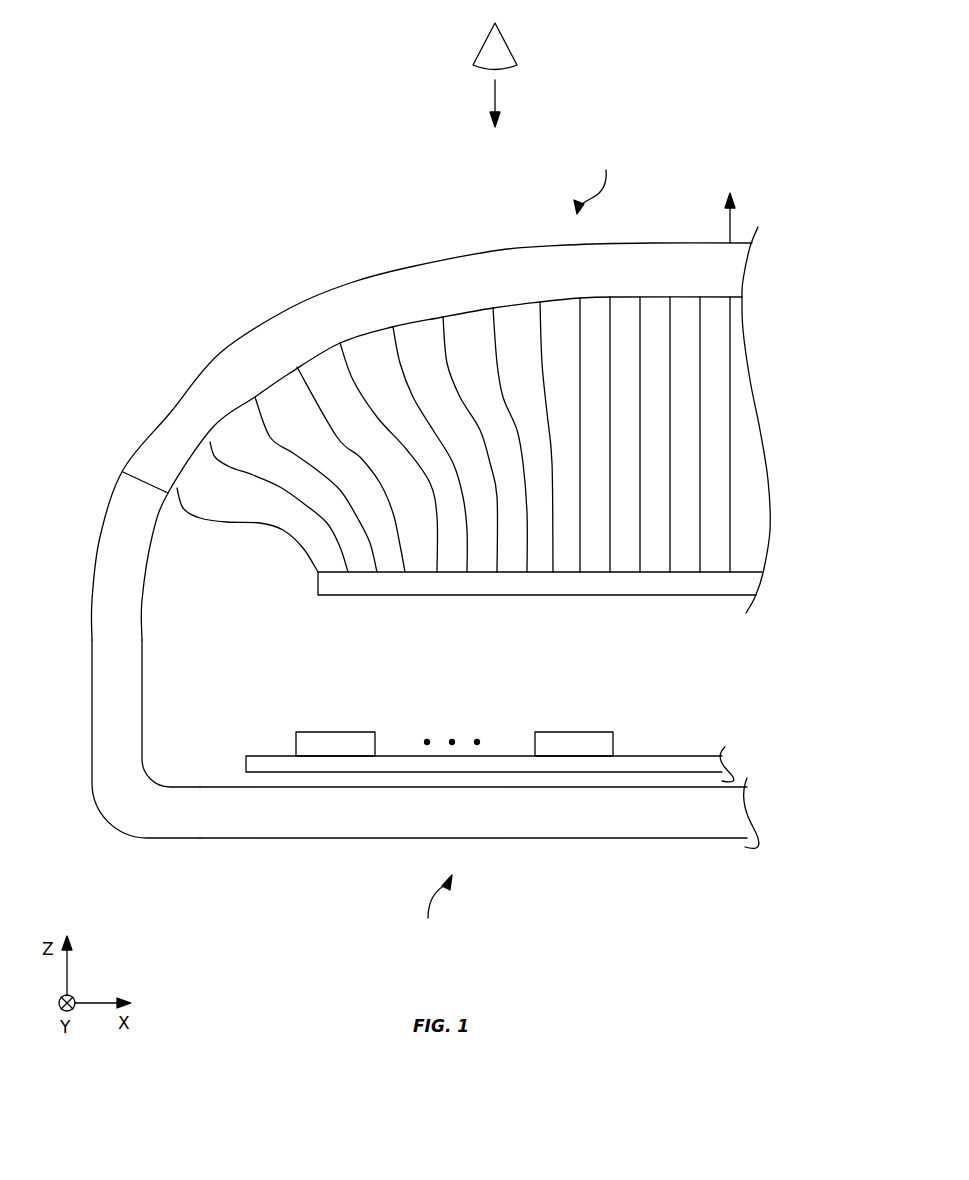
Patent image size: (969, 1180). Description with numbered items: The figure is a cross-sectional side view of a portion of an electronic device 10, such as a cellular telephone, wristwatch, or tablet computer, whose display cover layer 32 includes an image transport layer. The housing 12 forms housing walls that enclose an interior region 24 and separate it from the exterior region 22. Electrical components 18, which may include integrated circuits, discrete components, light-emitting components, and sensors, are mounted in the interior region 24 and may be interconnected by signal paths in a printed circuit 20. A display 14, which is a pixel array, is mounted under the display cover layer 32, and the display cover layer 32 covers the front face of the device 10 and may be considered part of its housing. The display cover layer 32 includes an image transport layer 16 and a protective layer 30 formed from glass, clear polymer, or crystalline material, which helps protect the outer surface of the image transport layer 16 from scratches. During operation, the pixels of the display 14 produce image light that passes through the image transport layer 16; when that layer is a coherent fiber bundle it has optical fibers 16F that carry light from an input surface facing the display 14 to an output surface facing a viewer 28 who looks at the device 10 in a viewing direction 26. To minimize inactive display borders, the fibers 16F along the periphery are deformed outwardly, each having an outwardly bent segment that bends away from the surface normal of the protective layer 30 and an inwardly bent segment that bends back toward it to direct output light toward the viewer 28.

The electronic device 10 is at (687, 154).
The housing 12 is at (580, 822).
The display 14 is at (713, 580).
The image transport layer 16 is at (793, 297).
The optical fibers 16F is at (293, 480).
The electrical components 18 is at (337, 742).
The printed circuit 20 is at (268, 752).
The exterior region 22 is at (233, 226).
The interior region 24 is at (195, 767).
The viewing direction 26 is at (497, 100).
The viewer 28 is at (508, 45).
The protective layer 30 is at (357, 292).
The display cover layer 32 is at (858, 240).